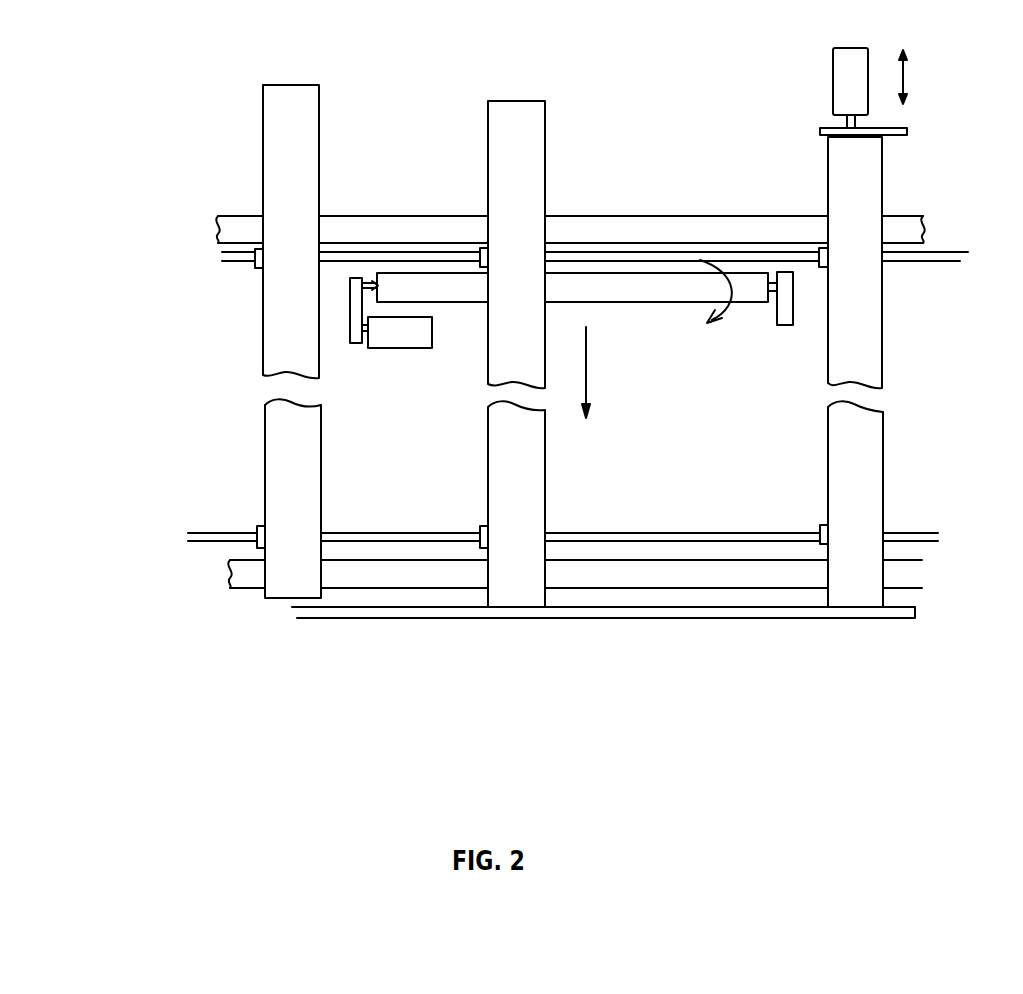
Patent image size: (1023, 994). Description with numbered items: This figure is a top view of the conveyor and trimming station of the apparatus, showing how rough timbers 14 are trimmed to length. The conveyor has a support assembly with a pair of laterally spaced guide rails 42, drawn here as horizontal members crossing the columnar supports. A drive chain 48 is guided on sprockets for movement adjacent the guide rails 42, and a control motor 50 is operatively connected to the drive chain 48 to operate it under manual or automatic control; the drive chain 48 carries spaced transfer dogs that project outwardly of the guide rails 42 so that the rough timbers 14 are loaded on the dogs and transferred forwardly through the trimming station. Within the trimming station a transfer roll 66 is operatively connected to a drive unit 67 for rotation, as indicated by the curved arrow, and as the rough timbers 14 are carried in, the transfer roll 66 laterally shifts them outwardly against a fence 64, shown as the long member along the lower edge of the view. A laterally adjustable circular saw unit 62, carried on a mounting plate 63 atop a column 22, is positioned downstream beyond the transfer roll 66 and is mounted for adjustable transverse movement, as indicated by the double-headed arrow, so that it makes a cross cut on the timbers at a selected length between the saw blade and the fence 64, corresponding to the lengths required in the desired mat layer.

The rough timber 14 is at (275, 101).
The column 22 is at (865, 165).
The guide rail 42 is at (233, 232).
The drive chain 48 is at (243, 260).
The control motor 50 is at (259, 529).
The circular saw unit 62 is at (840, 73).
The mounting plate 63 is at (820, 133).
The fence 64 is at (735, 610).
The transfer roll 66 is at (633, 290).
The drive unit 67 is at (397, 337).